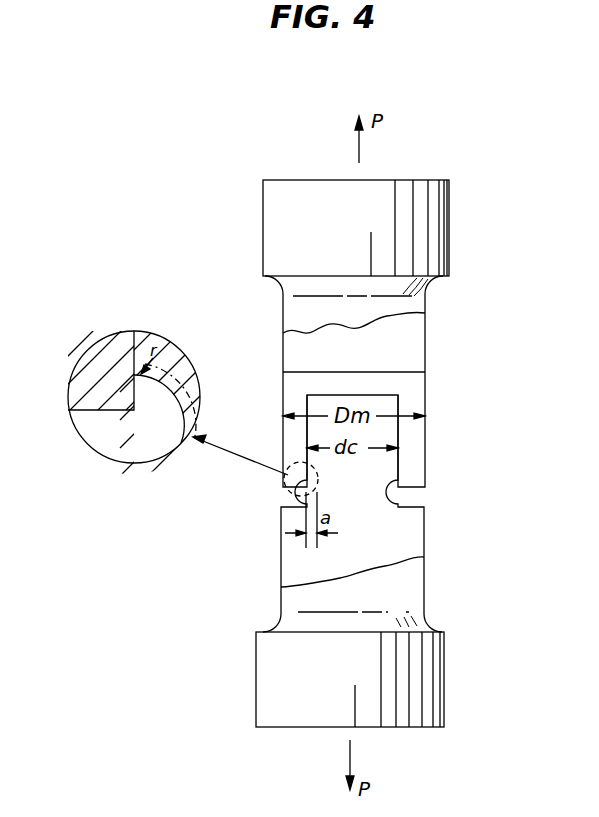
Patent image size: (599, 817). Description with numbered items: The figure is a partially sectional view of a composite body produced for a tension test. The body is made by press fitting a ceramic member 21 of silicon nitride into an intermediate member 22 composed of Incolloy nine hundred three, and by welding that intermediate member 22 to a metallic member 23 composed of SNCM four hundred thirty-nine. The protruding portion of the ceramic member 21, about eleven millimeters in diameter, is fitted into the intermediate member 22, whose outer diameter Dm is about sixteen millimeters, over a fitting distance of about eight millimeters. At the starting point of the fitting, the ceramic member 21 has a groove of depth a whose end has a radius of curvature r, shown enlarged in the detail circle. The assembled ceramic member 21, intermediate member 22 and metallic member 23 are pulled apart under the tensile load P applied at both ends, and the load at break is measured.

The ceramic member 21 is at (413, 538).
The intermediate member 22 is at (415, 455).
The metallic member 23 is at (414, 349).